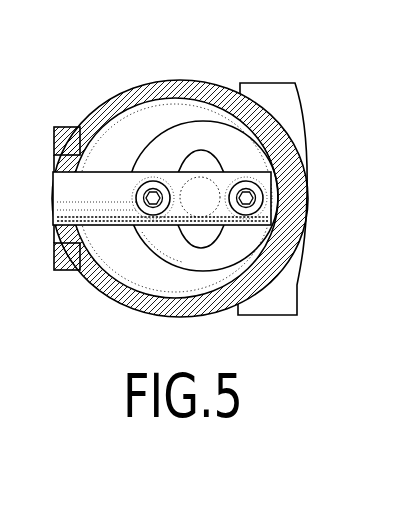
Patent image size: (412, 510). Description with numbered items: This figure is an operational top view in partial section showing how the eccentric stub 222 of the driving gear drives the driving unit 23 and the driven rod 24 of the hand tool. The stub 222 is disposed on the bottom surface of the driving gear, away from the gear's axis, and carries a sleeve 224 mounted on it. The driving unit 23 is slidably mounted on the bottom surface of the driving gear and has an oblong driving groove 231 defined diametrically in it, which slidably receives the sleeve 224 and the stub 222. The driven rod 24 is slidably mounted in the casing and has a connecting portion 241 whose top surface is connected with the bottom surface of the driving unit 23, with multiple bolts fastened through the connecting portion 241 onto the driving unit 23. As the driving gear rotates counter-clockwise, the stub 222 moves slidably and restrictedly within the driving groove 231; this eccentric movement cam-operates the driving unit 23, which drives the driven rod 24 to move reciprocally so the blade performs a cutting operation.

The driving unit 23 is at (168, 148).
The driving groove 231 is at (200, 150).
The driven rod 24 is at (63, 187).
The connecting portion 241 is at (121, 186).
The sleeve 224 is at (288, 172).
The stub 222 is at (198, 206).